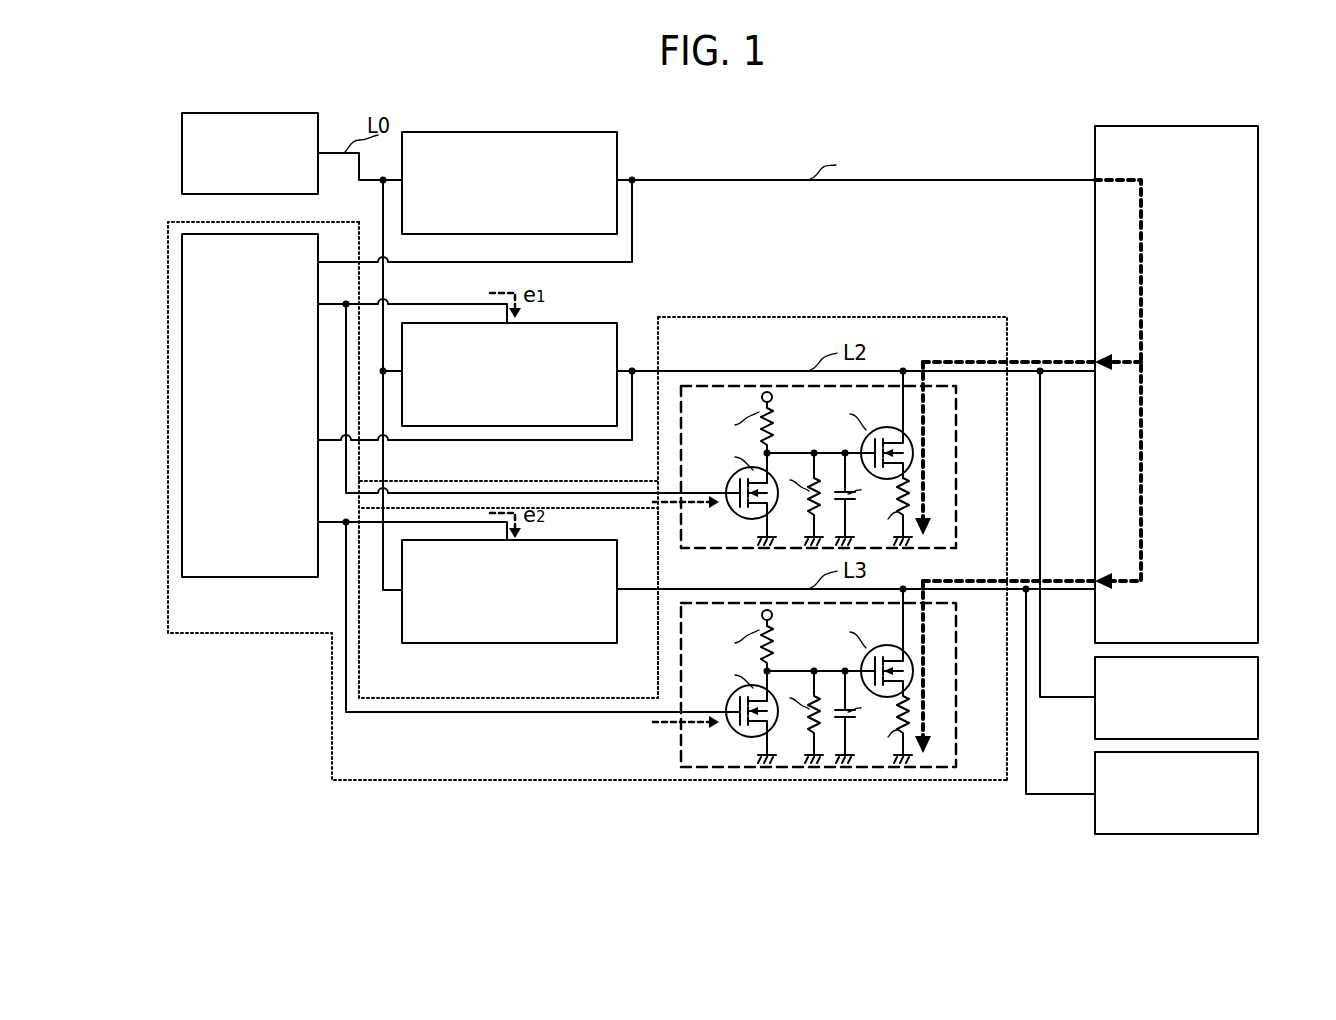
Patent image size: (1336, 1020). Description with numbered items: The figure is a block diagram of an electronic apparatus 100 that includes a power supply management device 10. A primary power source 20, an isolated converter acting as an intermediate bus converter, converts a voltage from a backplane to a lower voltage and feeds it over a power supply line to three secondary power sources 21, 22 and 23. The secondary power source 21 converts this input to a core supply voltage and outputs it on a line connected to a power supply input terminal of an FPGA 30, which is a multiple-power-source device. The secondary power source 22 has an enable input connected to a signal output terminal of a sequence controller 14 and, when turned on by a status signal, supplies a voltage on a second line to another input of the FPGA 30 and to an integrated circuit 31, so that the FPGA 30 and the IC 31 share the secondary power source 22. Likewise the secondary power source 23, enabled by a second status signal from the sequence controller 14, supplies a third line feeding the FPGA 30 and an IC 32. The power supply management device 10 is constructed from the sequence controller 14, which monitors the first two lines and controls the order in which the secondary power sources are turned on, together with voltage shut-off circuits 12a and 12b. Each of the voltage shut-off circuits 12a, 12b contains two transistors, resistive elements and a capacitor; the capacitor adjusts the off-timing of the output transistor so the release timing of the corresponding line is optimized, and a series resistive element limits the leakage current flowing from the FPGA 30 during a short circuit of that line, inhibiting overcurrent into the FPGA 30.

The electronic apparatus 100 is at (992, 130).
The primary power source 20 is at (252, 112).
The secondary power source 21 is at (565, 131).
The secondary power source 22 is at (565, 322).
The secondary power source 23 is at (565, 539).
The sequence controller 14 is at (248, 578).
The power supply management device 10 is at (748, 318).
The voltage shut-off circuit 12a is at (955, 397).
The voltage shut-off circuit 12b is at (955, 615).
The FPGA 30 is at (1175, 126).
The integrated circuit 31 is at (1258, 697).
The IC 32 is at (1258, 793).